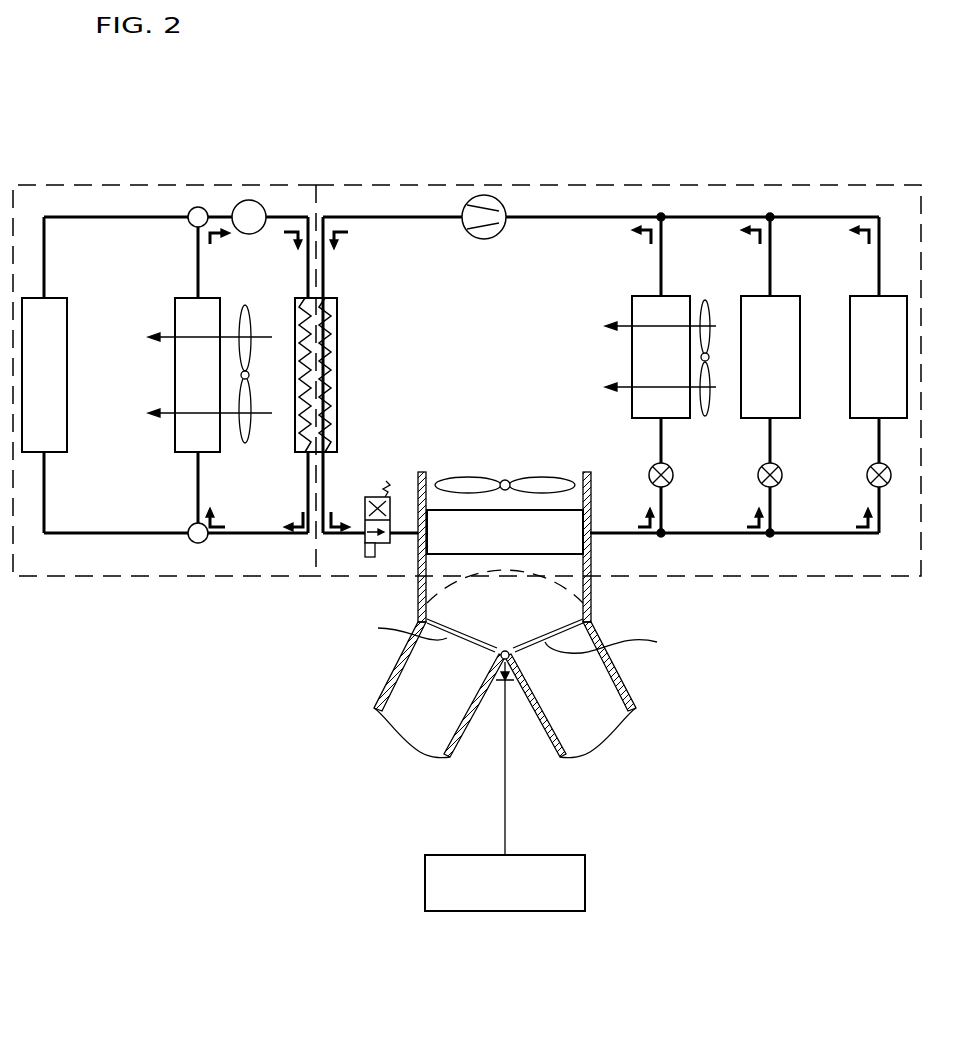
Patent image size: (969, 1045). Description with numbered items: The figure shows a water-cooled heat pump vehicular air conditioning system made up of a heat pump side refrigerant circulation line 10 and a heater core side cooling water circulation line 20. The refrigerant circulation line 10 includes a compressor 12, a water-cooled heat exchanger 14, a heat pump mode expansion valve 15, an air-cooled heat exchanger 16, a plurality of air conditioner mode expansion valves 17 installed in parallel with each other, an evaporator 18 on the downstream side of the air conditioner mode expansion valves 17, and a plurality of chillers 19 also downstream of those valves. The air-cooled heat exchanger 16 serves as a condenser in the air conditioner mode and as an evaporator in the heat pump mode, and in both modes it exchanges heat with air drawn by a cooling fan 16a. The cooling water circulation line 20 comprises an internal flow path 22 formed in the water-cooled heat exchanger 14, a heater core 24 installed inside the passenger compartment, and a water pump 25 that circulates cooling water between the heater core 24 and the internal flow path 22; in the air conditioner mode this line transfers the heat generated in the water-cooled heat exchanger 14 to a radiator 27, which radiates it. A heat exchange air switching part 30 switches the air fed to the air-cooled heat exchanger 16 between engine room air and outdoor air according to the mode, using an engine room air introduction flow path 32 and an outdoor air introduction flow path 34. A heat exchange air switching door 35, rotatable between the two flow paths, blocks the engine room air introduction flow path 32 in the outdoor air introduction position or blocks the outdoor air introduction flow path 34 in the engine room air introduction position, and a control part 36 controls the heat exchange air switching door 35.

The heat pump side refrigerant circulation line 10 is at (699, 180).
The compressor 12 is at (484, 195).
The water-cooled heat exchanger 14 is at (337, 333).
The heat pump mode expansion valve 15 is at (390, 515).
The air-cooled heat exchanger 16 is at (452, 532).
The cooling fan 16a is at (541, 485).
The air conditioner mode expansion valves 17 is at (672, 478).
The evaporator 18 is at (642, 312).
The chillers 19 is at (792, 293).
The heater core side cooling water circulation line 20 is at (276, 180).
The internal flow path 22 is at (295, 320).
The heater core 24 is at (175, 315).
The water pump 25 is at (246, 200).
The radiator 27 is at (67, 300).
The heat exchange air switching part 30 is at (372, 664).
The engine room air introduction flow path 32 is at (433, 719).
The outdoor air introduction flow path 34 is at (574, 718).
The heat exchange air switching door 35 is at (525, 653).
The control part 36 is at (505, 912).